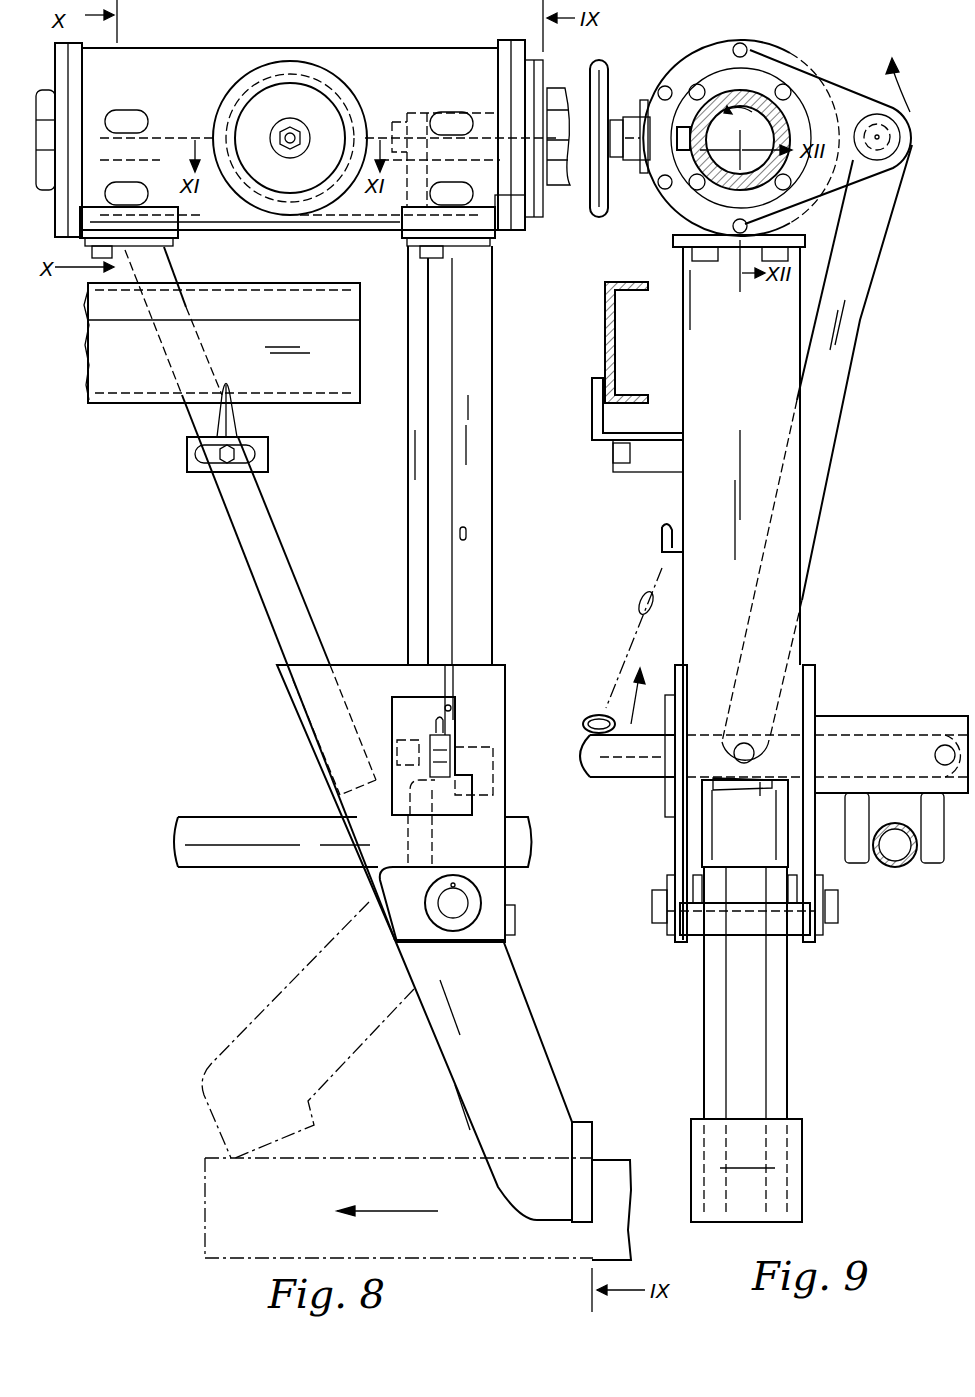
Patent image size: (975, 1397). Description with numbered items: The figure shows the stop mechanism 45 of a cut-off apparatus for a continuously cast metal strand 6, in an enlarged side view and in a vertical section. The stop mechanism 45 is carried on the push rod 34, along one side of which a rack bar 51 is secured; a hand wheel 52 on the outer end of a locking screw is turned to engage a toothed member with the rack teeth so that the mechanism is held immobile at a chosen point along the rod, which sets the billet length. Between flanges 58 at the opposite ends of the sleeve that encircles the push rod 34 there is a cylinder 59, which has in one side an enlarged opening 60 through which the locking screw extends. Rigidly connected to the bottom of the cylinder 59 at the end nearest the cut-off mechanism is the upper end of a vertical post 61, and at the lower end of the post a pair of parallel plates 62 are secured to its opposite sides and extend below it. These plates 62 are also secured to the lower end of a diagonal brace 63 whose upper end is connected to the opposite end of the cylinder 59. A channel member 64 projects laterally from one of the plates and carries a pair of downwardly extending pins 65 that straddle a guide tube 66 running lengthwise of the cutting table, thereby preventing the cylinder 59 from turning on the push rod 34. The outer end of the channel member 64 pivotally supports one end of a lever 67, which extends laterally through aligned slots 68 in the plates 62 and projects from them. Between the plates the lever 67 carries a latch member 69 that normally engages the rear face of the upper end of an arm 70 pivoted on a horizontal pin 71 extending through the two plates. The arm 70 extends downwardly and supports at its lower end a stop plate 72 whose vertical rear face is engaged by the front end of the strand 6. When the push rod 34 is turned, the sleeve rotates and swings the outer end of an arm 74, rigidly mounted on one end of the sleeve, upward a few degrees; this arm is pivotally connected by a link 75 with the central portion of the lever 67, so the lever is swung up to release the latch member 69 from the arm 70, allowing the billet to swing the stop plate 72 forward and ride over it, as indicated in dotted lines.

In FIG. 8, the continuously cast metal strand 6 is at (602, 1207).
In FIG. 8, the push rod 34 is at (563, 100).
In FIG. 9, the push rod 34 is at (800, 102).
In FIG. 8, the stop mechanism 45 is at (265, 42).
In FIG. 9, the stop mechanism 45 is at (805, 608).
In FIG. 8, the rack bar 51 is at (560, 185).
In FIG. 9, the rack bar 51 is at (690, 140).
In FIG. 8, the hand wheel 52 is at (350, 104).
In FIG. 9, the hand wheel 52 is at (605, 70).
In FIG. 8, the flanges 58 is at (75, 78).
In FIG. 9, the flanges 58 is at (770, 52).
In FIG. 8, the cylinder 59 is at (365, 50).
In FIG. 8, the enlarged opening 60 is at (250, 124).
In FIG. 8, the vertical post 61 is at (478, 412).
In FIG. 9, the vertical post 61 is at (695, 490).
In FIG. 8, the parallel plates 62 is at (373, 670).
In FIG. 9, the parallel plates 62 is at (815, 672).
In FIG. 8, the diagonal brace 63 is at (277, 607).
In FIG. 9, the channel member 64 is at (880, 716).
In FIG. 9, the pins 65 is at (930, 860).
In FIG. 8, the guide tube 66 is at (320, 855).
In FIG. 9, the guide tube 66 is at (893, 868).
In FIG. 8, the lever 67 is at (445, 757).
In FIG. 9, the lever 67 is at (650, 770).
In FIG. 8, the aligned slots 68 is at (450, 708).
In FIG. 8, the latch member 69 is at (440, 800).
In FIG. 9, the latch member 69 is at (735, 790).
In FIG. 8, the arm 70 is at (520, 1030).
In FIG. 9, the arm 70 is at (712, 1025).
In FIG. 8, the horizontal pin 71 is at (458, 903).
In FIG. 9, the horizontal pin 71 is at (652, 911).
In FIG. 8, the stop plate 72 is at (580, 1122).
In FIG. 9, the stop plate 72 is at (800, 1140).
In FIG. 8, the arm 74 is at (530, 205).
In FIG. 9, the arm 74 is at (845, 92).
In FIG. 8, the link 75 is at (425, 483).
In FIG. 9, the link 75 is at (850, 345).